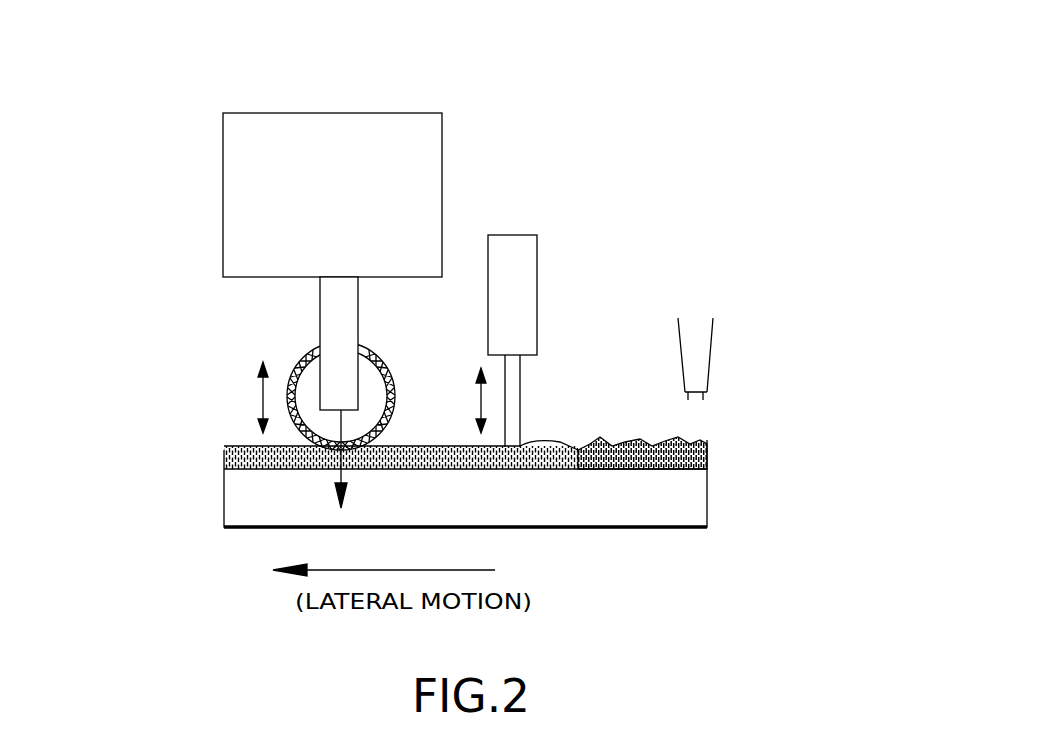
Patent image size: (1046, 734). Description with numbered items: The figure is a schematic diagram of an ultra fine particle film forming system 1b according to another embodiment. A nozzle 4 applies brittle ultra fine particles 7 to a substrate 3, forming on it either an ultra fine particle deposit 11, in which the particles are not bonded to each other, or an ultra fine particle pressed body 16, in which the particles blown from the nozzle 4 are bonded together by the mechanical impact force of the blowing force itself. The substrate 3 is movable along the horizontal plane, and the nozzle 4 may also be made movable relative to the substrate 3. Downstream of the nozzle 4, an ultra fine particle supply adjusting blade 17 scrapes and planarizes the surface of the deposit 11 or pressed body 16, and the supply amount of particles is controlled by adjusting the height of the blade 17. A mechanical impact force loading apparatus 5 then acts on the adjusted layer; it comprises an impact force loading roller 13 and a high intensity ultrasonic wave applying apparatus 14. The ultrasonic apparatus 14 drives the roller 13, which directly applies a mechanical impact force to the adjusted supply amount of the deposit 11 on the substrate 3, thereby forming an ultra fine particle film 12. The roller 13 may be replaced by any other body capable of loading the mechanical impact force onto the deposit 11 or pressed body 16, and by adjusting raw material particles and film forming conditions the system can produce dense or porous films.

The ultra fine particle film forming system 1b is at (507, 100).
The substrate 3 is at (537, 503).
The nozzle 4 is at (717, 348).
The mechanical impact force loading apparatus 5 is at (215, 267).
The brittle ultra fine particles 7 is at (710, 383).
The ultra fine particle deposit 11 is at (577, 450).
The ultra fine particle film 12 is at (225, 453).
The impact force loading roller 13 is at (390, 380).
The high intensity ultrasonic wave applying apparatus 14 is at (300, 135).
The ultra fine particle pressed body 16 is at (617, 364).
The ultra fine particle supply adjusting blade 17 is at (522, 383).